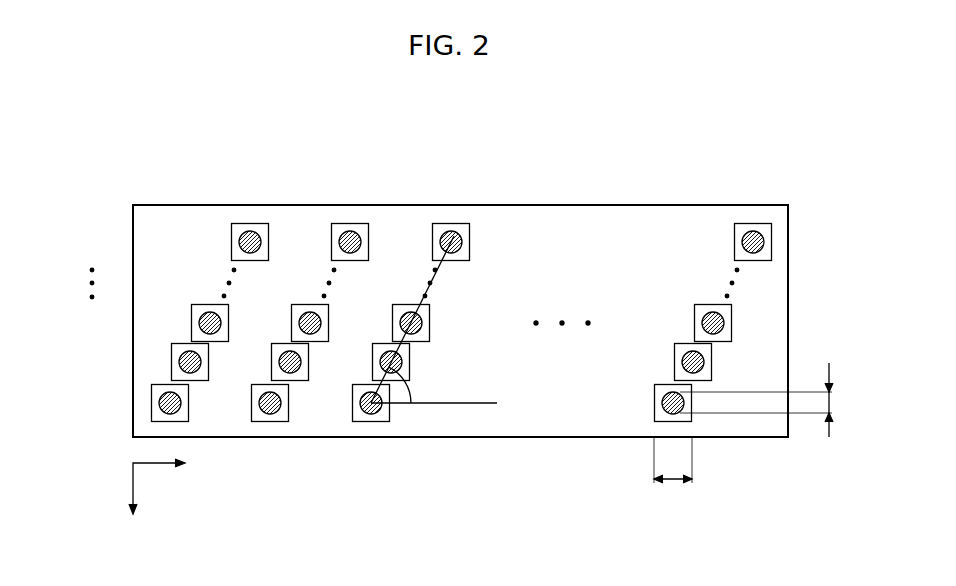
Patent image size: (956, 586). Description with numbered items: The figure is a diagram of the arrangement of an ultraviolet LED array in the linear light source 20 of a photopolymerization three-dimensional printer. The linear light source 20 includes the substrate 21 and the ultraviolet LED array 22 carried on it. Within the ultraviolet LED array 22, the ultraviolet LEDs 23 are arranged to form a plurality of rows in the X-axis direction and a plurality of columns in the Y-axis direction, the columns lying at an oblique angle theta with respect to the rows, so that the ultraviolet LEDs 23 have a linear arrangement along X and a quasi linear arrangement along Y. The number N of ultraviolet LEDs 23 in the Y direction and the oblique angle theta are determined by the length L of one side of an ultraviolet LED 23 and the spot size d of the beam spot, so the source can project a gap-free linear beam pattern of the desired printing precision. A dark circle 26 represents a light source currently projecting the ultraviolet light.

The linear light source 20 is at (690, 105).
The substrate 21 is at (594, 205).
The ultraviolet LED array 22 is at (231, 241).
The ultraviolet LED 23 is at (732, 320).
The dark circle 26 is at (765, 242).